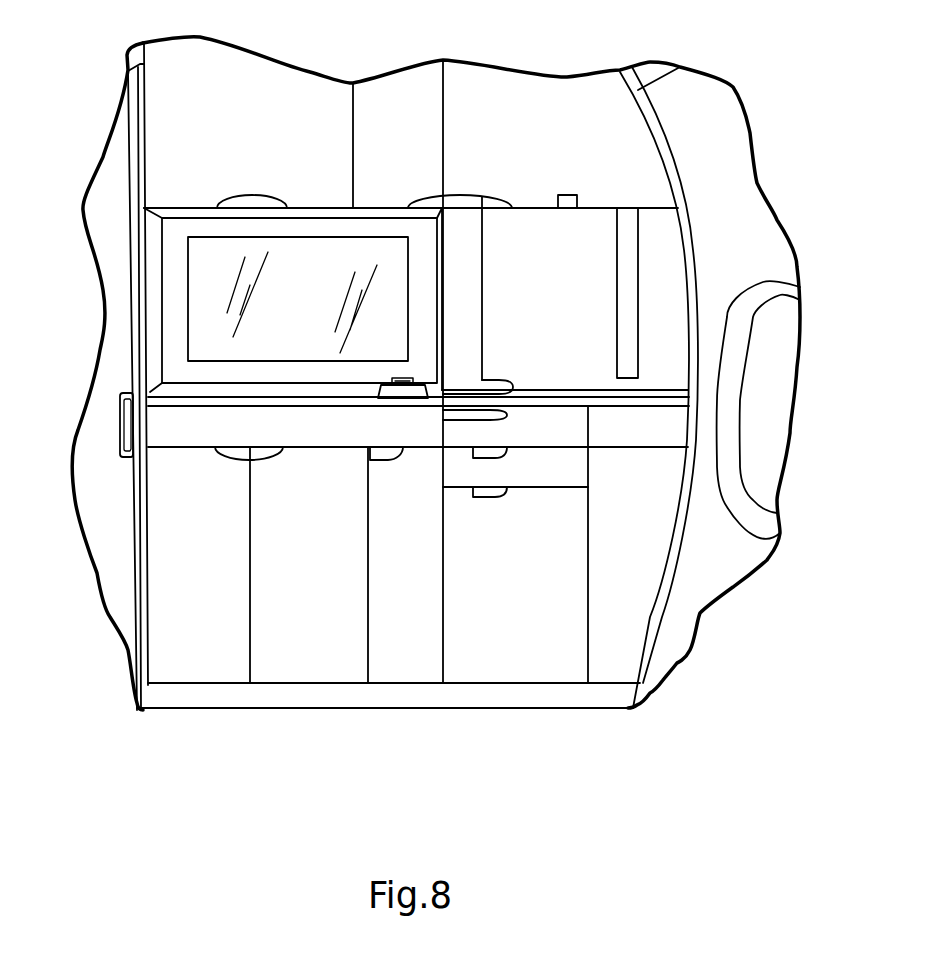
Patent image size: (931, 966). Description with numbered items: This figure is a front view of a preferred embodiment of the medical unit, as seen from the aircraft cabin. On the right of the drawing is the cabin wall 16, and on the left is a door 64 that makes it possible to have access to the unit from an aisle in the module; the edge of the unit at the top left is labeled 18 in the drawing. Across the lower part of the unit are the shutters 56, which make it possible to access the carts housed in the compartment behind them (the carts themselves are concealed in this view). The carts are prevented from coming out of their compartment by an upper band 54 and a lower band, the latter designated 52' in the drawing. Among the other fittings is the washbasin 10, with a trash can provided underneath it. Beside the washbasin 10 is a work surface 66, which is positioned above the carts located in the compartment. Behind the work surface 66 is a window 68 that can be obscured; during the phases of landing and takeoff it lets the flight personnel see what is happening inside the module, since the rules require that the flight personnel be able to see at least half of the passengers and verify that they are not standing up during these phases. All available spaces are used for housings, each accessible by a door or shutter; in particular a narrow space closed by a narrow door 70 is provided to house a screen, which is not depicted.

The washbasin 10 is at (413, 393).
The cabin wall 16 is at (715, 110).
The door frame edge 18 is at (135, 52).
The base 52' is at (388, 742).
The upper band 54 is at (320, 433).
The shutters 56 is at (280, 670).
The door 64 is at (100, 517).
The work surface 66 is at (177, 390).
The window 68 is at (312, 255).
The narrow door 70 is at (634, 238).